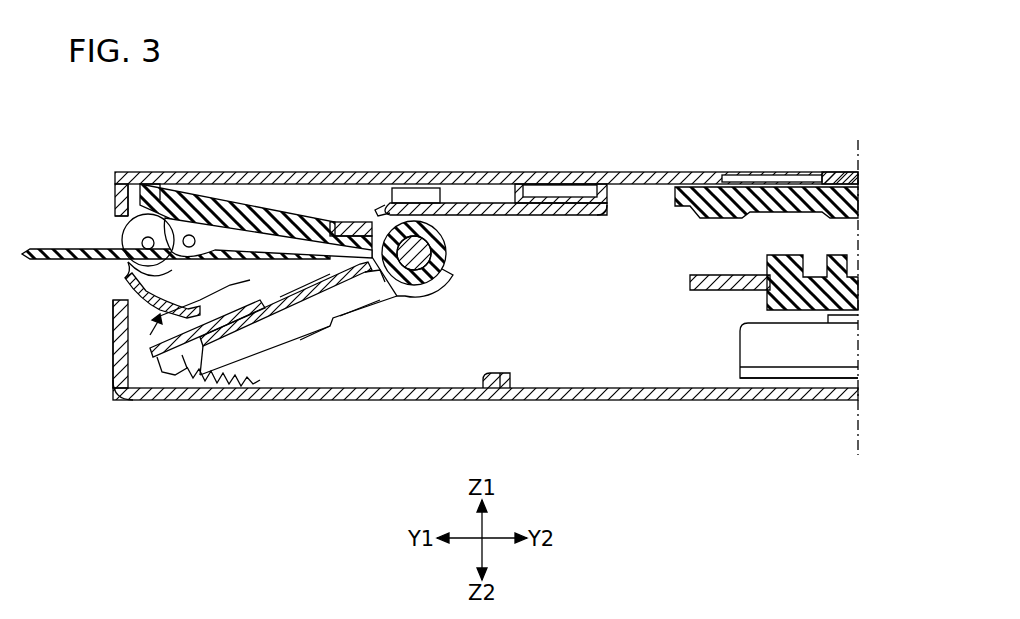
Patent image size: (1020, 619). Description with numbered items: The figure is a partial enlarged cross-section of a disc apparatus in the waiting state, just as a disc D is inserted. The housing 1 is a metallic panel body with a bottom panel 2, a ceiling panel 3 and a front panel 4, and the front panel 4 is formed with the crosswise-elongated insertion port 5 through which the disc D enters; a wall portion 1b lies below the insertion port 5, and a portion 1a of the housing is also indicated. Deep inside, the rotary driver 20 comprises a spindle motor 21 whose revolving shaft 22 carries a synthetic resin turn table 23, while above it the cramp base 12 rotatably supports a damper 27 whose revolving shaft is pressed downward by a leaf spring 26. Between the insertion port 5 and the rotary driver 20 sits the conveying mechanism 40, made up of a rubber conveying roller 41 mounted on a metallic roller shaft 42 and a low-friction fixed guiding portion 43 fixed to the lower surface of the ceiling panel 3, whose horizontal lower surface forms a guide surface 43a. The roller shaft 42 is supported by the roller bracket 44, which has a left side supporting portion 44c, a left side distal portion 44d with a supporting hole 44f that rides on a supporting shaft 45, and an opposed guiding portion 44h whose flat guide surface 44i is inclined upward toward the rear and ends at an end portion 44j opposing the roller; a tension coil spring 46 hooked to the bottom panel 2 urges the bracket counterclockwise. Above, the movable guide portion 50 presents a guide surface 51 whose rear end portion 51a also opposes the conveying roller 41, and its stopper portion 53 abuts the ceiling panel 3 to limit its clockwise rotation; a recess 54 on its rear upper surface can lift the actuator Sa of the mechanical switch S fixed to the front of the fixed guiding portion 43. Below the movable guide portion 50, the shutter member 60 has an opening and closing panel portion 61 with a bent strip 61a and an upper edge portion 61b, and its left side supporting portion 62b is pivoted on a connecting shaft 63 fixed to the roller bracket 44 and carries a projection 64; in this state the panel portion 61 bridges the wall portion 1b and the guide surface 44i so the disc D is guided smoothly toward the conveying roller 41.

The housing 1 is at (668, 170).
The housing top wall 1a is at (114, 205).
The wall portion 1b is at (115, 325).
The bottom panel 2 is at (560, 398).
The ceiling panel 3 is at (600, 178).
The front panel 4 is at (118, 345).
The insertion port 5 is at (115, 230).
The cramp base 12 is at (840, 180).
The rotary driver 20 is at (732, 355).
The spindle motor 21 is at (778, 347).
The revolving shaft 22 is at (853, 300).
The turn table 23 is at (713, 282).
The leaf spring 26 is at (753, 176).
The damper 27 is at (785, 195).
The conveying mechanism 40 is at (463, 248).
The conveying roller 41 is at (440, 222).
The roller shaft 42 is at (445, 262).
The fixed guiding portion 43 is at (553, 185).
The guide surface 43a is at (583, 210).
The roller bracket 44 is at (317, 340).
The left side supporting portion 44c is at (372, 320).
The left side distal portion 44d is at (125, 222).
The supporting hole 44f is at (122, 196).
The opposed guiding portion 44h is at (303, 337).
The guide surface 44i is at (327, 312).
The end portion 44j is at (357, 300).
The supporting shaft 45 is at (142, 243).
The tension coil spring 46 is at (230, 385).
The movable guide portion 50 is at (233, 195).
The guide surface 51 is at (277, 235).
The end portion 51a is at (397, 305).
The stopper portion 53 is at (145, 188).
The recess 54 is at (353, 223).
The shutter member 60 is at (117, 360).
The opening and closing panel portion 61 is at (147, 300).
The bent strip 61a is at (200, 335).
The upper edge portion 61b is at (147, 292).
The left side supporting portion 62b is at (163, 272).
The connecting shaft 63 is at (189, 235).
The projection 64 is at (275, 325).
The disc D is at (30, 248).
The switch S is at (417, 192).
The actuator Sa is at (380, 208).